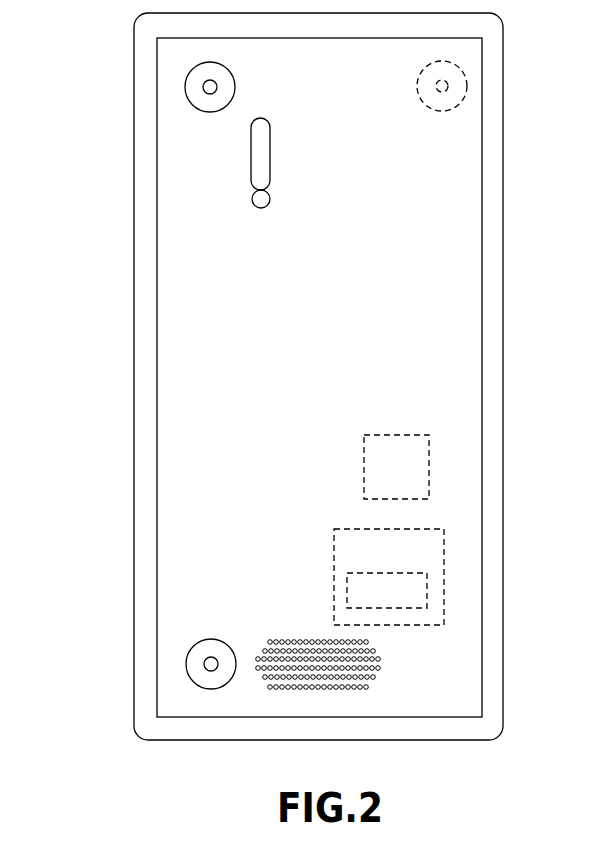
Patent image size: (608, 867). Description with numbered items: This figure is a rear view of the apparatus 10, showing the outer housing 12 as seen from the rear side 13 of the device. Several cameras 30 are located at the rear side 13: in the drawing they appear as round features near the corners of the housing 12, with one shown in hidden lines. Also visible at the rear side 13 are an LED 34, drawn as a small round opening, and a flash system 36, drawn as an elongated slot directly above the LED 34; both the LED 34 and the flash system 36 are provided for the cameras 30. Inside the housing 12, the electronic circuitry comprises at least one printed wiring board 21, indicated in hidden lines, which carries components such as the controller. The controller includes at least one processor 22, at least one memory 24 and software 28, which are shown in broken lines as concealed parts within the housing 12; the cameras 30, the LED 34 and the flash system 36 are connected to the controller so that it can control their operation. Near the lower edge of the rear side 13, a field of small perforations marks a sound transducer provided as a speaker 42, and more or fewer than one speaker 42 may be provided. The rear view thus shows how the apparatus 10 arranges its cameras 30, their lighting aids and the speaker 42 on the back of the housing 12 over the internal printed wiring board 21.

The apparatus 10 is at (543, 80).
The housing 12 is at (489, 268).
The rear side 13 is at (467, 360).
The printed wiring board 21 is at (460, 506).
The processor 22 is at (429, 453).
The memory 24 is at (444, 543).
The software 28 is at (420, 593).
The cameras 30 is at (193, 80).
The LED 34 is at (255, 196).
The flash system 36 is at (259, 163).
The speaker 42 is at (350, 672).